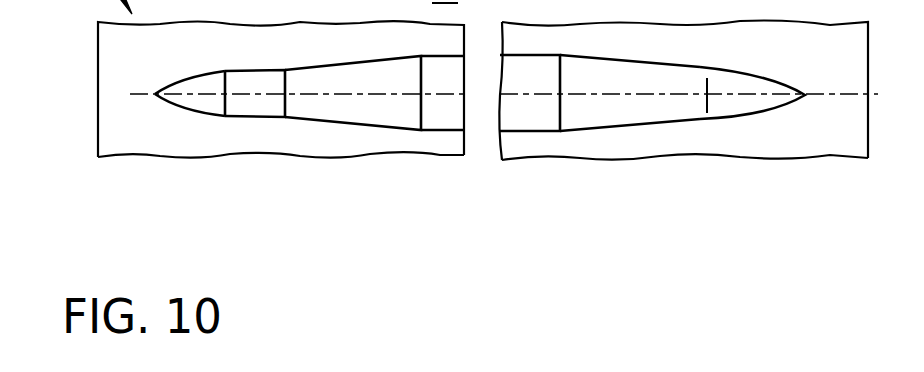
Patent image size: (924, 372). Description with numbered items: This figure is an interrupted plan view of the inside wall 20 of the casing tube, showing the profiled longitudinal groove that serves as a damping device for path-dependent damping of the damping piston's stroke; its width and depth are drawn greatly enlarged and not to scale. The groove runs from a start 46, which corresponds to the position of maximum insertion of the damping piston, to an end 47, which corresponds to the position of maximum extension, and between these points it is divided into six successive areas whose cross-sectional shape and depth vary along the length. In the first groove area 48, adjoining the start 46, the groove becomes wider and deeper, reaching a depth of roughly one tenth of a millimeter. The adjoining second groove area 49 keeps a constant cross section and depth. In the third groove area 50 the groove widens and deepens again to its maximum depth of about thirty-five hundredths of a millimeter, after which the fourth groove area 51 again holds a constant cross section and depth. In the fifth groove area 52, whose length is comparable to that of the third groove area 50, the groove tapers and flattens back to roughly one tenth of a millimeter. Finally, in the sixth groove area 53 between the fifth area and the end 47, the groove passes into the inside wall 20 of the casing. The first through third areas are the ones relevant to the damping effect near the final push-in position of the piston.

The inside wall 20 is at (833, 125).
The start of the groove 46 is at (156, 96).
The end of the groove 47 is at (806, 96).
The first groove area 48 is at (190, 105).
The second groove area 49 is at (253, 105).
The third groove area 50 is at (330, 105).
The fourth groove area 51 is at (543, 118).
The fifth groove area 52 is at (627, 110).
The sixth groove area 53 is at (718, 110).